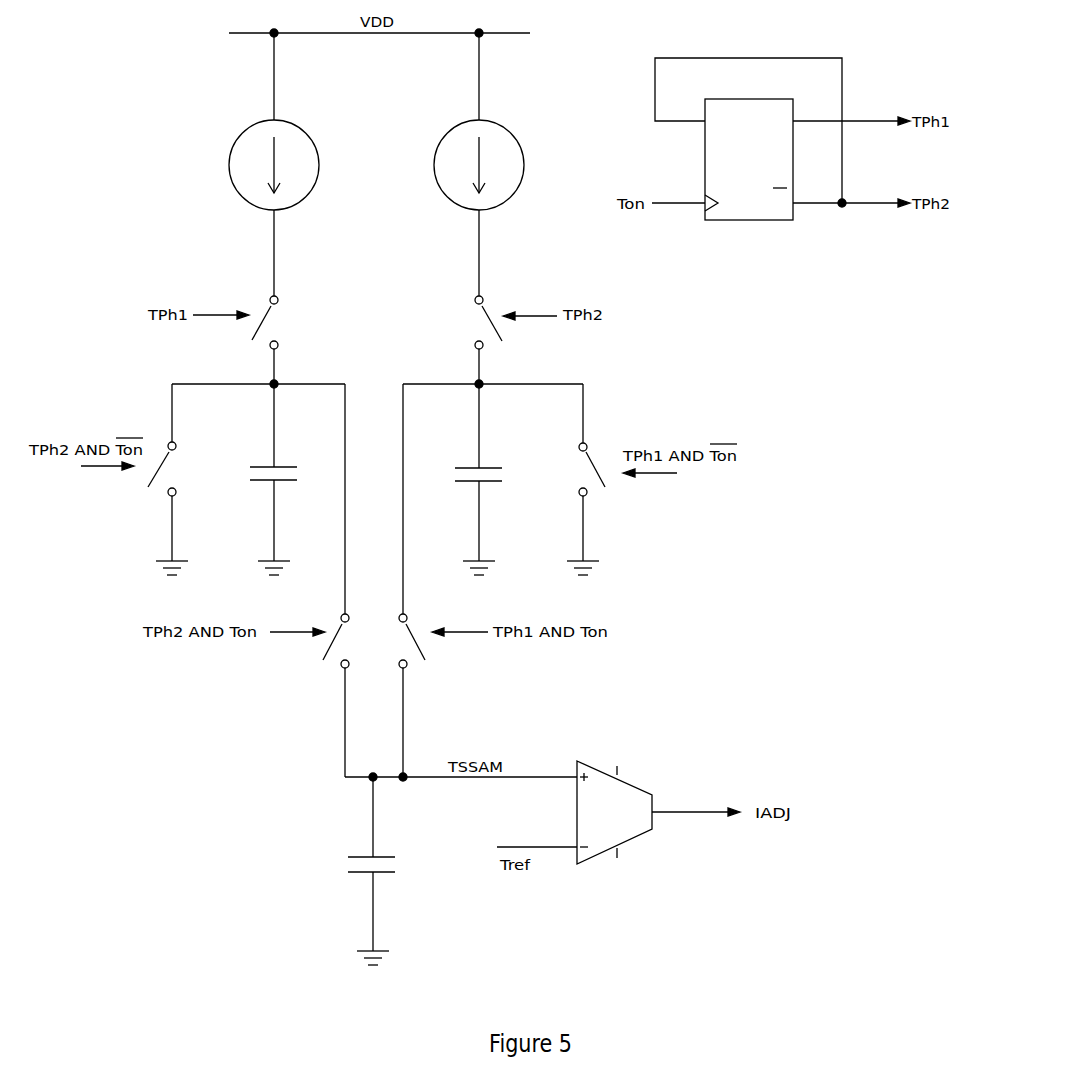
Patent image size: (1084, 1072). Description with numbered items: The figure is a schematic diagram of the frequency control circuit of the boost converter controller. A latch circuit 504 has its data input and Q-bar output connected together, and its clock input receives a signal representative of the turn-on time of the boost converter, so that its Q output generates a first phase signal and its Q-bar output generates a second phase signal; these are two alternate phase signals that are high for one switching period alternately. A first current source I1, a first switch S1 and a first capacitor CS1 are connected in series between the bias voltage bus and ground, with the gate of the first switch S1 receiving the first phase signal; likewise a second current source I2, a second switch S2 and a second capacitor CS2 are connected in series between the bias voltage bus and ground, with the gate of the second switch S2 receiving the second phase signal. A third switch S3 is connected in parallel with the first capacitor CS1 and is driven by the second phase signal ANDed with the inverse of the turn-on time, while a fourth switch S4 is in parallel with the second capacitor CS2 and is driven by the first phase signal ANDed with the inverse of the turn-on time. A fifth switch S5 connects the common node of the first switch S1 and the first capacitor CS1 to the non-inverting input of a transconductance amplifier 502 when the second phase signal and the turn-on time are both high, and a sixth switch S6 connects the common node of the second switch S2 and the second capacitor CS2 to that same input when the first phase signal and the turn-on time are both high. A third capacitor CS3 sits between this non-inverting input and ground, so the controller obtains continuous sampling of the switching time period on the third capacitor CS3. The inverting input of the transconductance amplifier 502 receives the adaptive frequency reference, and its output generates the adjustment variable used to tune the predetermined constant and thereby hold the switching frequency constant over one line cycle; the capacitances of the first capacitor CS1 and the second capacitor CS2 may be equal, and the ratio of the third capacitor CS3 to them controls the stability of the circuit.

The transconductance amplifier 502 is at (630, 821).
The latch circuit 504 is at (765, 167).
The first current source I1 is at (257, 164).
The second current source I2 is at (495, 164).
The first switch S1 is at (277, 340).
The second switch S2 is at (472, 340).
The third switch S3 is at (173, 479).
The fourth switch S4 is at (579, 479).
The fifth switch S5 is at (344, 580).
The sixth switch S6 is at (404, 580).
The first capacitor CS1 is at (257, 479).
The second capacitor CS2 is at (495, 479).
The third capacitor CS3 is at (388, 871).